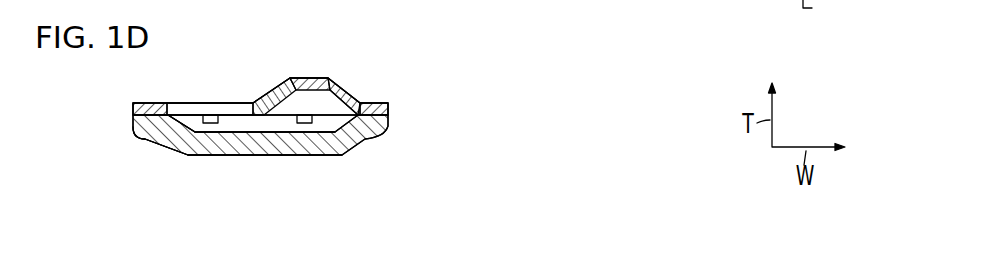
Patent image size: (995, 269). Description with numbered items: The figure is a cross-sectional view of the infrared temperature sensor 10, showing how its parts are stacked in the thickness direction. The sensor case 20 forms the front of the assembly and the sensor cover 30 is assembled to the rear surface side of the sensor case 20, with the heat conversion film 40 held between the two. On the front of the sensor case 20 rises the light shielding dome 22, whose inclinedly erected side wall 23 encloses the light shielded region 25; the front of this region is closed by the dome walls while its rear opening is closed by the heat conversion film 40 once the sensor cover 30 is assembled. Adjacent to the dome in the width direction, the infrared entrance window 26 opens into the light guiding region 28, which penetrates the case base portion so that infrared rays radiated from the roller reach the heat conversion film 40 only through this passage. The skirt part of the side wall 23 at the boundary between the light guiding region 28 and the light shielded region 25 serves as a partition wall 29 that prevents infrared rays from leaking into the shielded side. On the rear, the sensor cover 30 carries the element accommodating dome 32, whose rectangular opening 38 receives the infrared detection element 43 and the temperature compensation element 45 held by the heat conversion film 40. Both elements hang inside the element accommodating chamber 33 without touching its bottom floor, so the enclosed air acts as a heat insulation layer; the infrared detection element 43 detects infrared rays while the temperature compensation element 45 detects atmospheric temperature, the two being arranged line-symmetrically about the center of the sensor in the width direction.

The infrared temperature sensor 10 is at (397, 114).
The sensor case 20 is at (368, 102).
The light shielding dome 22 is at (288, 77).
The side wall 23 is at (347, 83).
The light shielded region 25 is at (309, 93).
The infrared entrance window 26 is at (168, 103).
The light guiding region 28 is at (213, 109).
The partition wall 29 is at (284, 147).
The sensor cover 30 is at (381, 141).
The element accommodating dome 32 is at (162, 152).
The element accommodating chamber 33 is at (207, 124).
The rectangular opening 38 is at (177, 126).
The heat conversion film 40 is at (337, 88).
The infrared detection element 43 is at (257, 118).
The temperature compensation element 45 is at (306, 125).